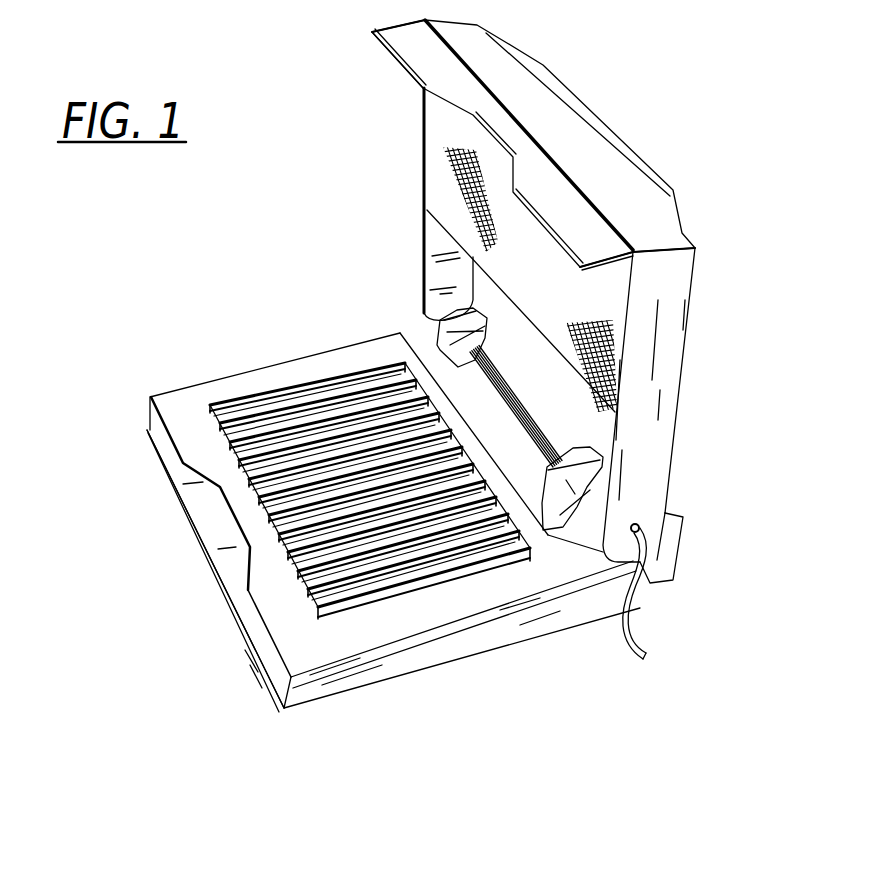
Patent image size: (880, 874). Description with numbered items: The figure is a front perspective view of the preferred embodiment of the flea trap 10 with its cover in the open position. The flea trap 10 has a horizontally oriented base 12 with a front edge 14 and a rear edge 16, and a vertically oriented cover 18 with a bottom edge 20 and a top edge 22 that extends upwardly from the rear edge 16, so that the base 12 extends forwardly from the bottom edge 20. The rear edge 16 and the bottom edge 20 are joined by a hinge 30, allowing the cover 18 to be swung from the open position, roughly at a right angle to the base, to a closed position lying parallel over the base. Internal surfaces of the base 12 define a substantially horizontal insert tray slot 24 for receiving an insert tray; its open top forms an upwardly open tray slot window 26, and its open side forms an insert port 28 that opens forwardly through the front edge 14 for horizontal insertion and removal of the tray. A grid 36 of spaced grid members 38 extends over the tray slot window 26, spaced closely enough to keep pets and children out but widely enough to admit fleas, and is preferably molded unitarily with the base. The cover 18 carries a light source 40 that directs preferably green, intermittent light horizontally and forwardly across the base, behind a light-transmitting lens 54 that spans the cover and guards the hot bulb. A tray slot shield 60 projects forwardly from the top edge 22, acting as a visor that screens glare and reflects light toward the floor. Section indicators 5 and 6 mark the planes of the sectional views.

The section line 5- 5 is at (240, 363).
The section line 6- 6 is at (523, 88).
The flea trap 10 is at (632, 120).
The base 12 is at (388, 677).
The front edge 14 is at (290, 704).
The rear edge 16 is at (672, 582).
The cover 18 is at (677, 414).
The bottom edge 20 is at (650, 548).
The top edge 22 is at (695, 248).
The insert tray slot 24 is at (150, 432).
The tray slot window 26 is at (250, 465).
The insert port 28 is at (245, 652).
The hinge 30 is at (437, 328).
The grid 36 is at (300, 578).
The grid members 38 is at (272, 508).
The light source 40 is at (455, 153).
The lens 54 is at (445, 187).
The tray slot shield 60 is at (352, 49).